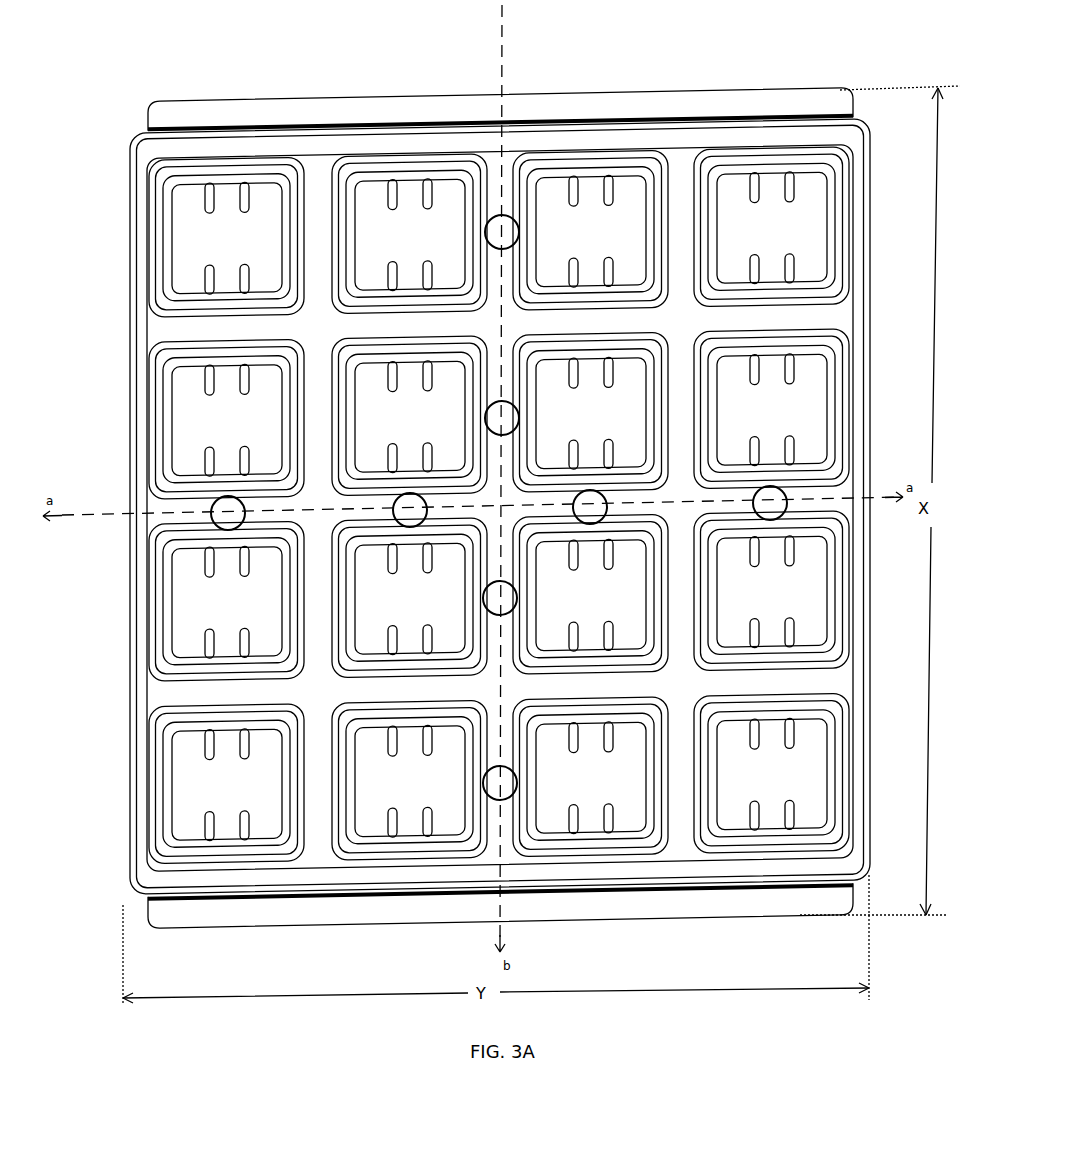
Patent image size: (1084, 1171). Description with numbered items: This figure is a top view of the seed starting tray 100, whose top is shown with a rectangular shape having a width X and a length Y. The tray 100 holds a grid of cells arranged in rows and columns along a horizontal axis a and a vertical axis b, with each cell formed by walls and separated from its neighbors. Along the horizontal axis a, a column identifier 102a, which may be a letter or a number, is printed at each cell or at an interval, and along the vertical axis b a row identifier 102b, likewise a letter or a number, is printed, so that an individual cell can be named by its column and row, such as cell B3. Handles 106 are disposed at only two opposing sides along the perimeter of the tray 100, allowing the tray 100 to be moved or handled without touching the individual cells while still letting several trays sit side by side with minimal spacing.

The seed starting tray 100 is at (635, 44).
The handles 106 is at (253, 101).
The column identifier 102a is at (210, 507).
The row identifier 102b is at (495, 214).